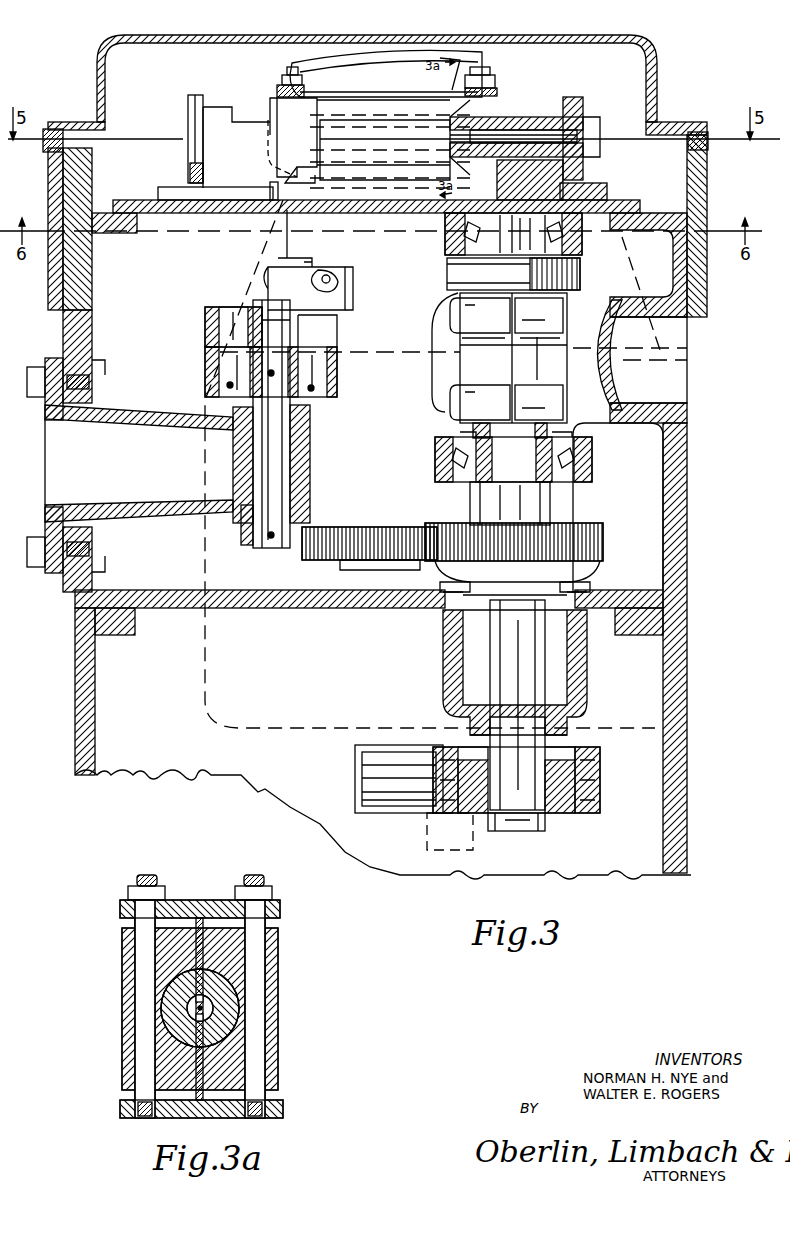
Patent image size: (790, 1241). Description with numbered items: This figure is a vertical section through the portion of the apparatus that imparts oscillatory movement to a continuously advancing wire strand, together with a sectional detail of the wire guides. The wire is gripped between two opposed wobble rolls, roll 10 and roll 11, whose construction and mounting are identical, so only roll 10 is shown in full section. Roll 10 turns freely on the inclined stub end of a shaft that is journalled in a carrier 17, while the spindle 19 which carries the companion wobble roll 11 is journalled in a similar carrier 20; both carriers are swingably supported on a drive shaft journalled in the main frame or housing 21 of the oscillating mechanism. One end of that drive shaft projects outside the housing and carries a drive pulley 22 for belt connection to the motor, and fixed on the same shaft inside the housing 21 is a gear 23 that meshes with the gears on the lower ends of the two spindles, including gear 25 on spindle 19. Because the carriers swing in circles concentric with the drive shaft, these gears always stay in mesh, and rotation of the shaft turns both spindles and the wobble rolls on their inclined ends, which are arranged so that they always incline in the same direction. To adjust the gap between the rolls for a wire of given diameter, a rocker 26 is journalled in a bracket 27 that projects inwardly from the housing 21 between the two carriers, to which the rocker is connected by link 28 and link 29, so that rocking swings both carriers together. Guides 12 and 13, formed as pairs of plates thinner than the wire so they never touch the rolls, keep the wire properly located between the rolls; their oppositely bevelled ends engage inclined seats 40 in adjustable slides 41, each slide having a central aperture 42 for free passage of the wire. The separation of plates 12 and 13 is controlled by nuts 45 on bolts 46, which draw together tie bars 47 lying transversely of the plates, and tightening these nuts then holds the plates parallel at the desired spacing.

In FIG. 3, the roll 10 is at (292, 62).
In FIG. 3, the roll 11 is at (258, 158).
In FIG. 3, the guide 12 is at (368, 95).
In FIG. 3A, the guide 12 is at (195, 942).
In FIG. 3, the guide 13 is at (317, 148).
In FIG. 3A, the guide 13 is at (195, 1058).
In FIG. 3, the carrier 17 is at (590, 452).
In FIG. 3, the spindle 19 is at (345, 563).
In FIG. 3, the carrier 20 is at (422, 394).
In FIG. 3, the main frame or housing 21 is at (248, 605).
In FIG. 3, the drive pulley 22 is at (573, 805).
In FIG. 3, the gear 23 is at (593, 545).
In FIG. 3, the gear 25 is at (300, 556).
In FIG. 3, the rocker 26 is at (205, 360).
In FIG. 3, the bracket 27 is at (155, 413).
In FIG. 3, the link 28 is at (332, 268).
In FIG. 3, the link 29 is at (205, 323).
In FIG. 3, the inclined seat 40 is at (462, 72).
In FIG. 3A, the inclined seat 40 is at (212, 998).
In FIG. 3, the adjustable slide 41 is at (247, 121).
In FIG. 3A, the adjustable slide 41 is at (215, 975).
In FIG. 3, the central aperture 42 is at (577, 136).
In FIG. 3A, the central aperture 42 is at (210, 1020).
In FIG. 3, the nut 45 is at (282, 78).
In FIG. 3A, the nut 45 is at (128, 890).
In FIG. 3, the bolt 46 is at (288, 66).
In FIG. 3A, the bolt 46 is at (143, 875).
In FIG. 3, the tie bar 47 is at (273, 88).
In FIG. 3A, the tie bar 47 is at (280, 910).